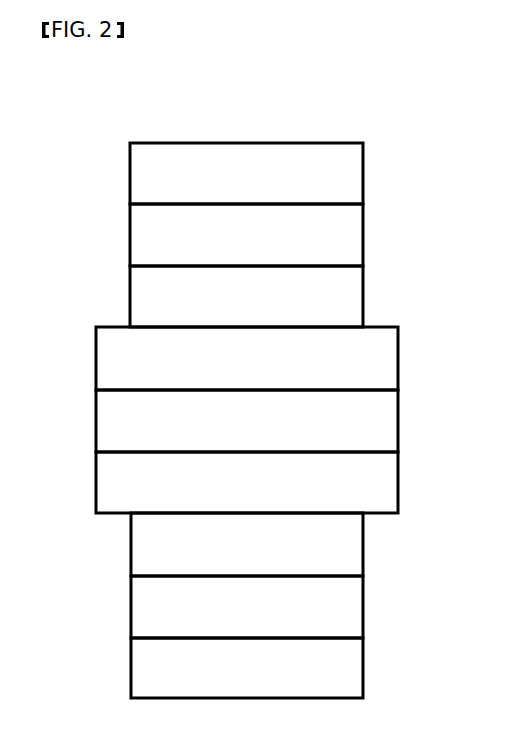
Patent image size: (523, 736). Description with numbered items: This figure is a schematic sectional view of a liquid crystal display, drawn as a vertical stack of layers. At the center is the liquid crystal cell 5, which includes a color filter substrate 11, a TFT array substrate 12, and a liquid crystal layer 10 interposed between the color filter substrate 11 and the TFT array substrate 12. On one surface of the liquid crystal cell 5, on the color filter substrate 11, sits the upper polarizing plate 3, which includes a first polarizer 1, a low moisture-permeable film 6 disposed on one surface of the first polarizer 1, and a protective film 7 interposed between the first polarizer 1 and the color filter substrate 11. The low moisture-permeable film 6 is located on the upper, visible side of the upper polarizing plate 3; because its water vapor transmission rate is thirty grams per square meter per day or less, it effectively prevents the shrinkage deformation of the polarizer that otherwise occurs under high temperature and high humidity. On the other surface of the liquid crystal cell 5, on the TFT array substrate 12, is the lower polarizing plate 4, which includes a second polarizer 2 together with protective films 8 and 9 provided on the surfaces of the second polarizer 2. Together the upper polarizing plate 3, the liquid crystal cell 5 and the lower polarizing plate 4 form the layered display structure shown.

The first polarizer 1 is at (246, 235).
The second polarizer 2 is at (247, 607).
The upper polarizing plate 3 is at (120, 147).
The lower polarizing plate 4 is at (120, 520).
The liquid crystal cell 5 is at (408, 330).
The low moisture-permeable film 6 is at (246, 173).
The protective film 7 is at (246, 296).
The protective film 8 is at (247, 544).
The protective film 9 is at (247, 668).
The liquid crystal layer 10 is at (247, 421).
The color filter substrate 11 is at (247, 358).
The TFT array substrate 12 is at (247, 482).